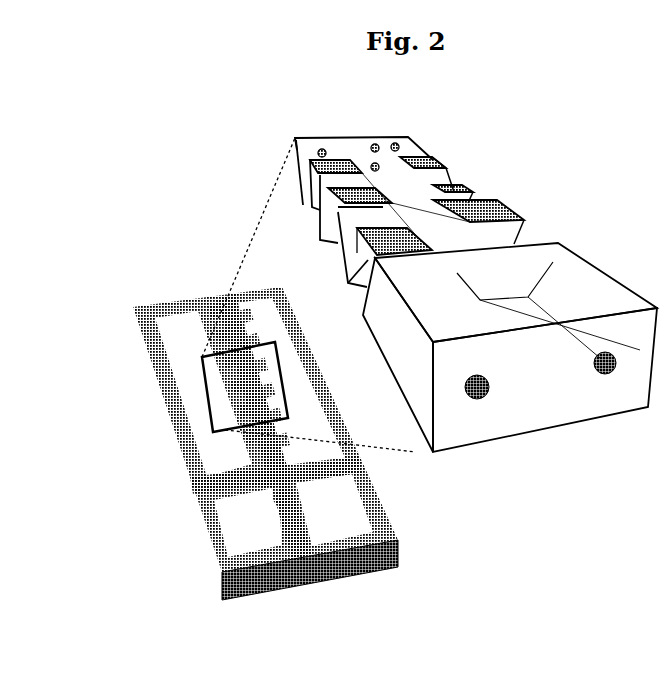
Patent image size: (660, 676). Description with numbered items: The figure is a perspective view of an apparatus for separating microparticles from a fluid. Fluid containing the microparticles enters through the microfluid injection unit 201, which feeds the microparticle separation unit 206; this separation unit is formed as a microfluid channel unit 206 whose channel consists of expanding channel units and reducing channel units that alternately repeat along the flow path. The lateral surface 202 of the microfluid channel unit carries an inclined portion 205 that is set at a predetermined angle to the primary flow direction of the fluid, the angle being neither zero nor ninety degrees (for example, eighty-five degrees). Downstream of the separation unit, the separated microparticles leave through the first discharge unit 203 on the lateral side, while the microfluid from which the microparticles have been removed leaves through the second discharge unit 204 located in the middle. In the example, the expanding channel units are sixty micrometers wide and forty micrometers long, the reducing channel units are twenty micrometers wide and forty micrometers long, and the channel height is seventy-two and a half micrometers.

The microfluid injection unit 201 is at (207, 343).
The lateral surface of the microfluid channel unit 202 is at (440, 158).
The first discharge unit (lateral surface) 203 is at (330, 477).
The second discharge unit (middle) 204 is at (335, 582).
The inclined portion 205 is at (487, 249).
The microparticle separation unit (microfluid channel unit) 206 is at (202, 402).